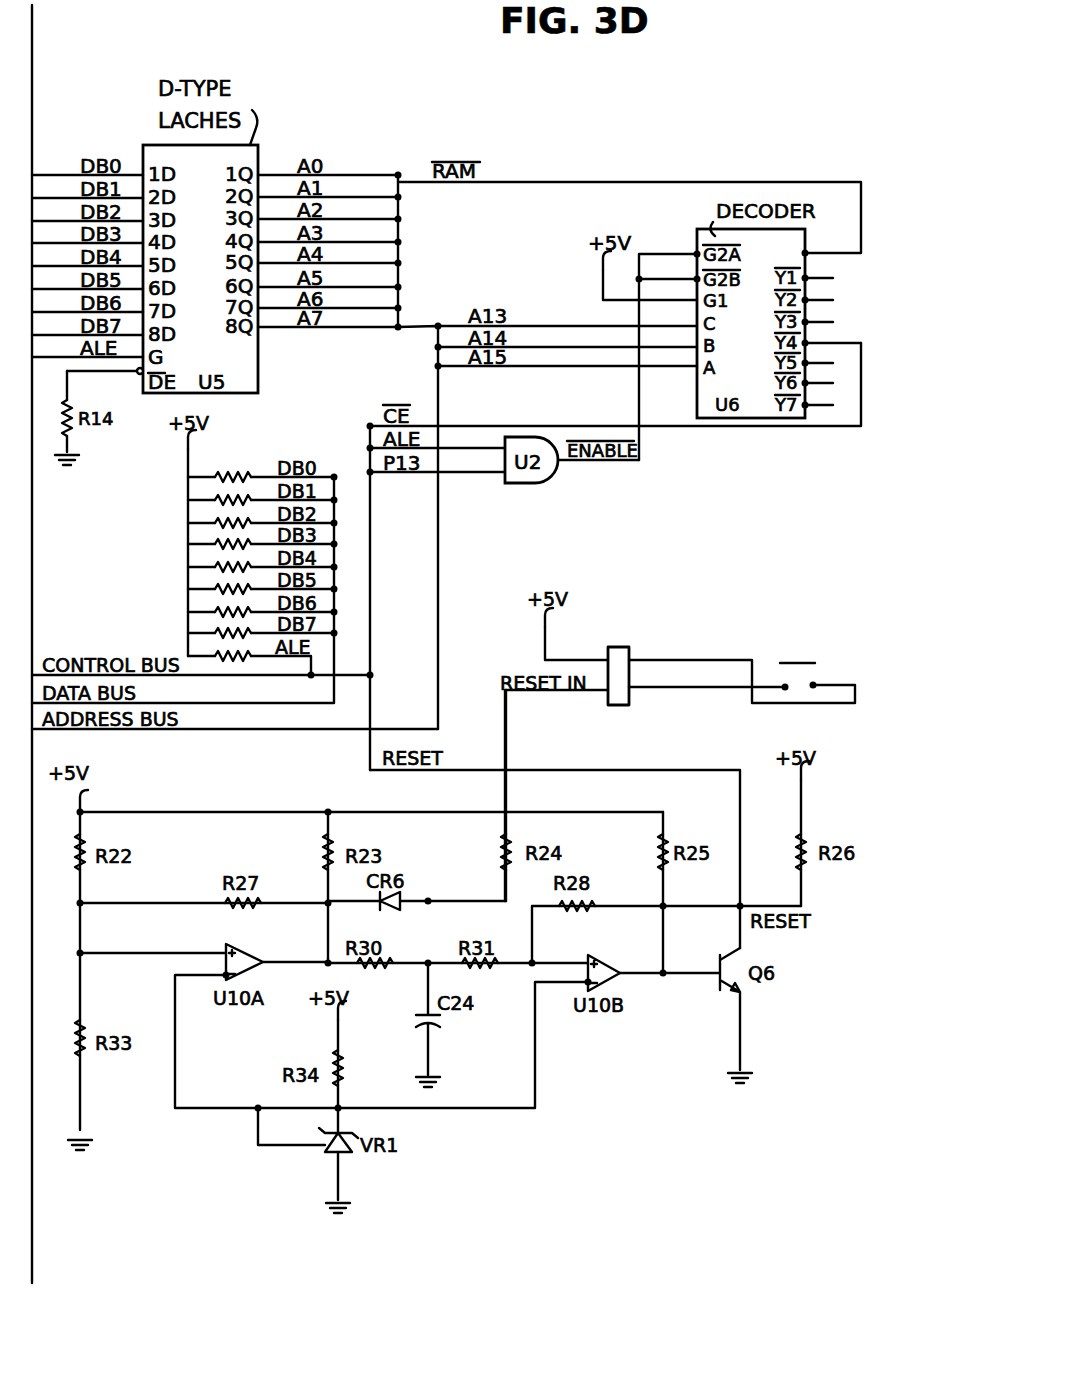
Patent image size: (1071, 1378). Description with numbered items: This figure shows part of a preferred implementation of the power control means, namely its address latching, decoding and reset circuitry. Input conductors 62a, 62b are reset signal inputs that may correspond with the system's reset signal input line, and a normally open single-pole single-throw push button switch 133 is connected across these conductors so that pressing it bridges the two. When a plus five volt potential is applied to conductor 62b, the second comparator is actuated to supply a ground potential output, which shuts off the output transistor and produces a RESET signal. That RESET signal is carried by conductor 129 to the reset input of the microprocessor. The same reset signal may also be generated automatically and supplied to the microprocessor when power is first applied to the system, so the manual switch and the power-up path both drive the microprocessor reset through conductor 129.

The input conductor 62a is at (692, 660).
The input conductor 62b is at (692, 693).
The push button switch 133 is at (798, 663).
The conductor 129 is at (556, 770).